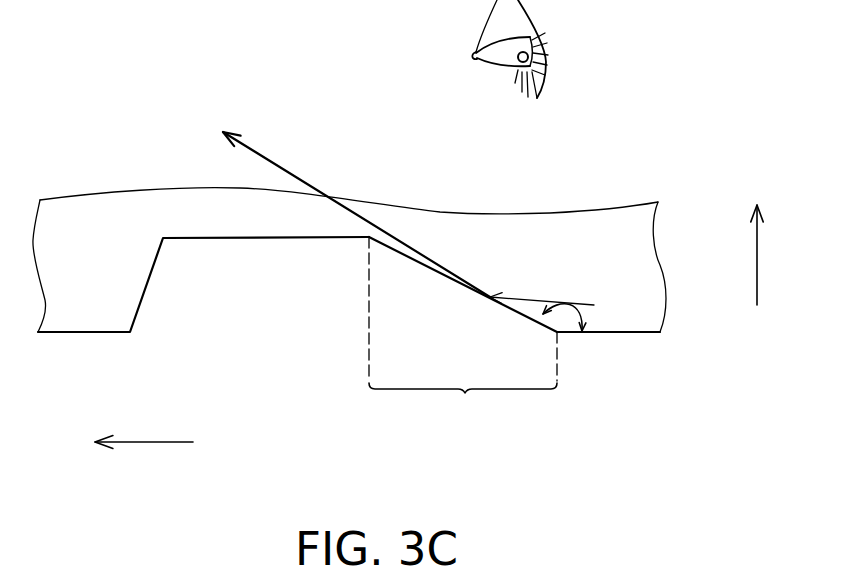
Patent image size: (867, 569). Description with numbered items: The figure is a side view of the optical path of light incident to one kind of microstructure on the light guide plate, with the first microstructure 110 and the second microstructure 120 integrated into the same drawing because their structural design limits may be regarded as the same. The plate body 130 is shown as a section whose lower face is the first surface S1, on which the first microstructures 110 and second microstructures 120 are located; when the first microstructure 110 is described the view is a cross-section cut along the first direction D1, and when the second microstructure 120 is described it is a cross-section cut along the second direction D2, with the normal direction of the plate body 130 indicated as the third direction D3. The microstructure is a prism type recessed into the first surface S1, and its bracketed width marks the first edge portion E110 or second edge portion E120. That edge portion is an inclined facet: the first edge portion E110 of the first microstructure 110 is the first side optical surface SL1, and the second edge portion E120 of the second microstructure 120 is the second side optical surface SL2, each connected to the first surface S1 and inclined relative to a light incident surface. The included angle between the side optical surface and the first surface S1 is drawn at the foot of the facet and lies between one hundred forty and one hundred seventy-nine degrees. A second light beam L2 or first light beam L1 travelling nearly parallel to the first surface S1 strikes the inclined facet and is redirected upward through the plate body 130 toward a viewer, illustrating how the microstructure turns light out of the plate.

The first microstructure 110 is at (361, 367).
The second microstructure 120 is at (361, 367).
The plate body 130 is at (630, 232).
The first surface S1 is at (602, 335).
The first edge portion E110 is at (463, 337).
The second edge portion E120 is at (463, 337).
The first light beam L1 is at (536, 303).
The second light beam L2 is at (542, 270).
The first side optical surface SL1 is at (395, 214).
The second side optical surface SL2 is at (412, 257).
The first direction D1 is at (144, 426).
The second direction D2 is at (144, 426).
The third direction D3 is at (773, 255).